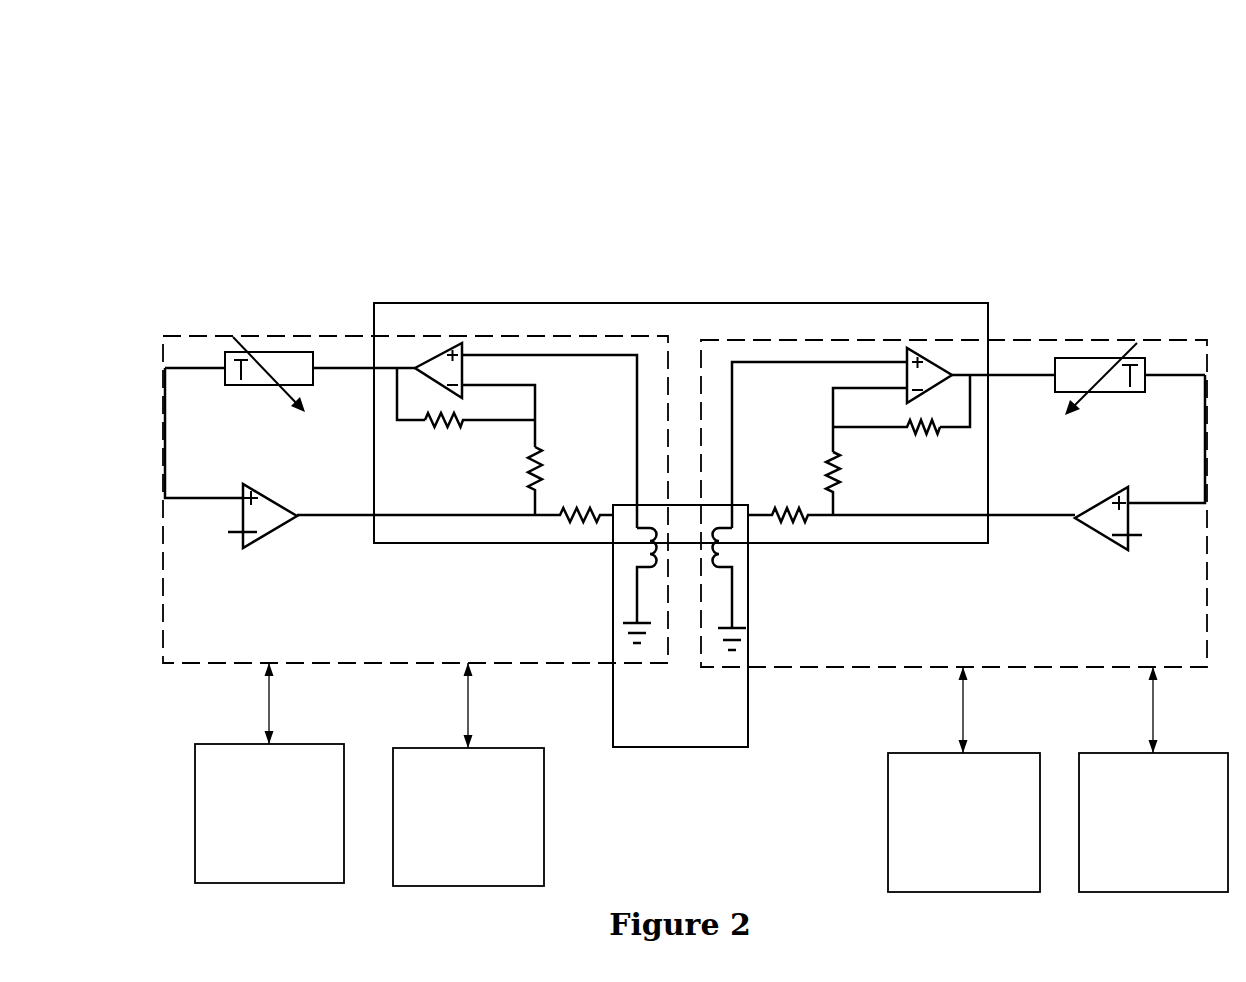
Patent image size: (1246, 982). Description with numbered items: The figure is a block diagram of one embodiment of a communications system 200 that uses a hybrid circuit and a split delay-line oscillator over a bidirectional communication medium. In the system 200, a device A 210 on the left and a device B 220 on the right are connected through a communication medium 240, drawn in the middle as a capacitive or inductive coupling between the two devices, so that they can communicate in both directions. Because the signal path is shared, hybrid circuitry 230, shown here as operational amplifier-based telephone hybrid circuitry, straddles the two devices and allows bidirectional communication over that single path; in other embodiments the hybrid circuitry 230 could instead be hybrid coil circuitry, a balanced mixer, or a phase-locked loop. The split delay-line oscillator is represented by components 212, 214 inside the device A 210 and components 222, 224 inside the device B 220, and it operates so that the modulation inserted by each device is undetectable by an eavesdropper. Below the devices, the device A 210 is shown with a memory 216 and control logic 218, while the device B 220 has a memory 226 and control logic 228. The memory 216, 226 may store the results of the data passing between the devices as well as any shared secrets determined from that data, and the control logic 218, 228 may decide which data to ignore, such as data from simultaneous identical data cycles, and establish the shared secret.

The communications system 200 is at (200, 84).
The device A 210 is at (261, 651).
The split delay-line oscillator component 212 is at (311, 491).
The split delay-line oscillator component 214 is at (217, 413).
The memory 216 is at (250, 839).
The control logic 218 is at (449, 842).
The device B 220 is at (1166, 651).
The split delay-line oscillator component 222 is at (1052, 502).
The split delay-line oscillator component 224 is at (1105, 419).
The memory 226 is at (944, 849).
The control logic 228 is at (1134, 849).
The hybrid circuitry 230 is at (625, 302).
The communication medium 240 is at (748, 703).